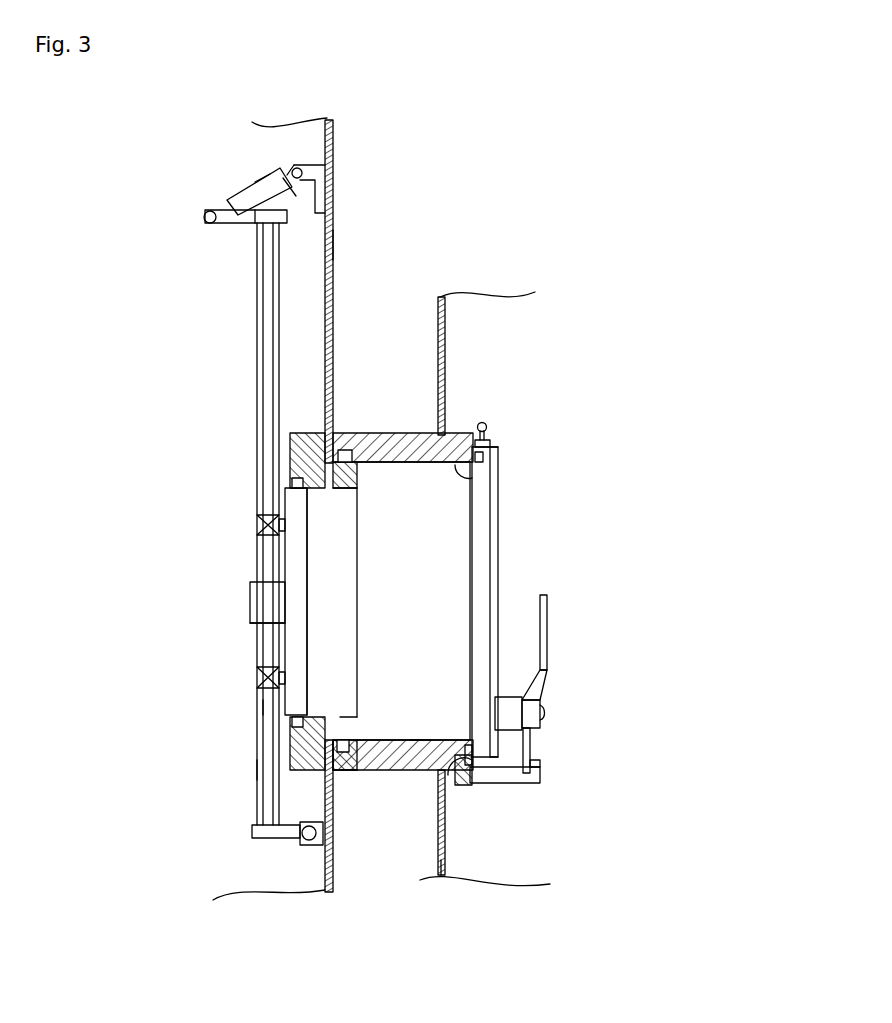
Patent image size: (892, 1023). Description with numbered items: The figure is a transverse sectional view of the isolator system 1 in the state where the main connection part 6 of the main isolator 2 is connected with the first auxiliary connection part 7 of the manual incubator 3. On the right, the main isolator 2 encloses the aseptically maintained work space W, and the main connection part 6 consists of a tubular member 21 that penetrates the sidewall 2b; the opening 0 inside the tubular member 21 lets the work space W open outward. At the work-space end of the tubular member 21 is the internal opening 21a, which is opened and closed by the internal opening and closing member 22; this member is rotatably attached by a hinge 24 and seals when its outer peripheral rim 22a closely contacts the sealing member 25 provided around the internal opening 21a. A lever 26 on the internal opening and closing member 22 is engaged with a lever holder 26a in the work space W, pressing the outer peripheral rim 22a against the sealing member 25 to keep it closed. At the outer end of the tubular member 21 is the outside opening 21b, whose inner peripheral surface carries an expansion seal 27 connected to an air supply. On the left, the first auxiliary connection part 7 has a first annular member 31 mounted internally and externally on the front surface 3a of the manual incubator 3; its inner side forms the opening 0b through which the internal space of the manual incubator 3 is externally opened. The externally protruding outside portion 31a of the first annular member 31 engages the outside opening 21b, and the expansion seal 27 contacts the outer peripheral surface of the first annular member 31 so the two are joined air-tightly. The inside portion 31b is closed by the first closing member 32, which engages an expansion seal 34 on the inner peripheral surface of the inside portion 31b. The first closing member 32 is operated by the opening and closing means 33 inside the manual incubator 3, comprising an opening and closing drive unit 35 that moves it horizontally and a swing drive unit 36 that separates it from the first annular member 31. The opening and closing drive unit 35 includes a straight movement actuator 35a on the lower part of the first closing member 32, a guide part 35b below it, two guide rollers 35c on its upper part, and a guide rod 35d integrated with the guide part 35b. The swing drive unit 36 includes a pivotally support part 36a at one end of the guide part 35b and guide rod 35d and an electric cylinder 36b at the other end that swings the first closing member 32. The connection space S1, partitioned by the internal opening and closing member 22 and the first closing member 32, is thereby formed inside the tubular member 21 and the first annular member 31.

The isolator system 1 is at (461, 122).
The main isolator 2 is at (493, 296).
The sidewall 2b is at (440, 882).
The manual incubator 3 is at (328, 118).
The front surface 3a is at (334, 245).
The main connection part 6 is at (378, 431).
The first auxiliary connection part 7 is at (376, 560).
The tubular member 21 is at (418, 766).
The internal opening 21a is at (478, 470).
The outside opening 21b is at (351, 742).
The internal opening and closing member 22 is at (499, 548).
The outer peripheral rim 22a is at (484, 458).
The hinge 24 is at (487, 428).
The sealing member 25 is at (471, 790).
The lever 26 is at (546, 686).
The lever holder 26a is at (542, 783).
The expansion seal 27 is at (345, 462).
The first annular member 31 is at (323, 432).
The outside portion 31a is at (350, 478).
The inside portion 31b is at (336, 790).
The first closing member 32 is at (289, 555).
The opening and closing means 33 is at (255, 358).
The expansion seal 34 is at (291, 483).
The opening and closing drive unit 35 is at (248, 602).
The straight movement actuator 35a is at (262, 628).
The guide part 35b is at (262, 770).
The guide rollers 35c is at (257, 524).
The guide rod 35d is at (270, 708).
The swing drive unit 36 is at (246, 186).
The pivotally support part 36a is at (296, 848).
The electric cylinder 36b is at (262, 178).
The opening 0 is at (419, 740).
The opening 0b is at (346, 718).
The connection space S1 is at (415, 622).
The work space W is at (619, 591).